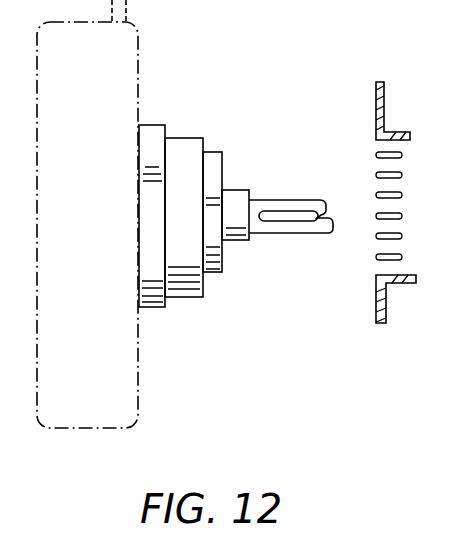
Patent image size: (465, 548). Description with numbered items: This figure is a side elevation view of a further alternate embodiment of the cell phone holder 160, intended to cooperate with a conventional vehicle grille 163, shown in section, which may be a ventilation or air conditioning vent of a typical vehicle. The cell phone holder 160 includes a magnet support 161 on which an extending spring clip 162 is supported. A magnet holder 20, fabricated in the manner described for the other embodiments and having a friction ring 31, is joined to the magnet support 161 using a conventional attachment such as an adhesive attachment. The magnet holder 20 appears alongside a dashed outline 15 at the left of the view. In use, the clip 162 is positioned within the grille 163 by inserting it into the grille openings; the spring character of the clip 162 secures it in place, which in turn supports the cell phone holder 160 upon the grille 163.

The wall 15 is at (140, 70).
The friction ring 31 is at (143, 122).
The cell phone holder 160 is at (249, 203).
The magnet holder 20 is at (203, 137).
The magnet support 161 is at (219, 272).
The spring clip 162 is at (268, 200).
The vehicle grille 163 is at (376, 238).